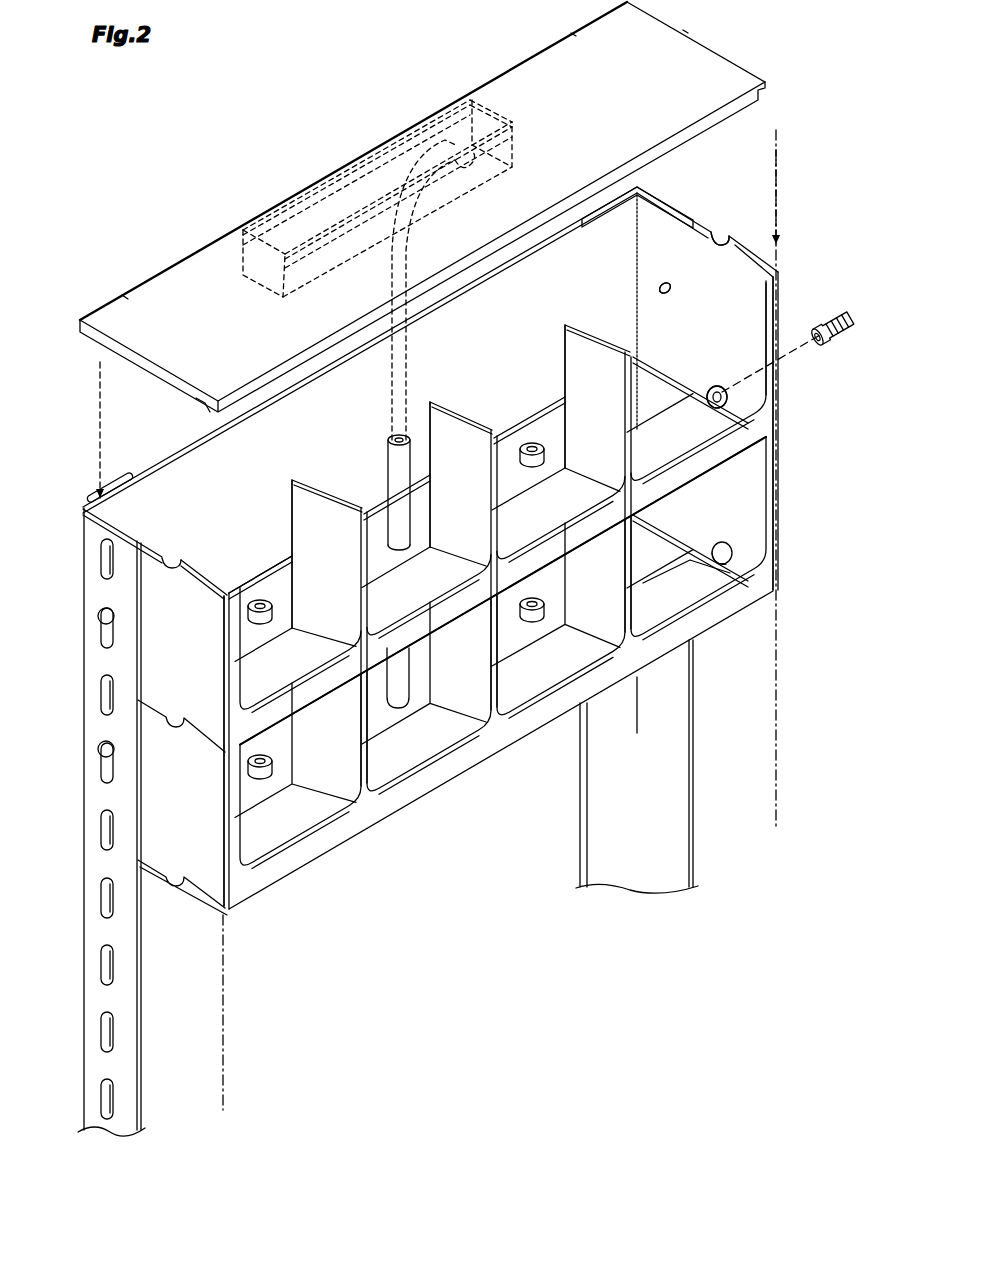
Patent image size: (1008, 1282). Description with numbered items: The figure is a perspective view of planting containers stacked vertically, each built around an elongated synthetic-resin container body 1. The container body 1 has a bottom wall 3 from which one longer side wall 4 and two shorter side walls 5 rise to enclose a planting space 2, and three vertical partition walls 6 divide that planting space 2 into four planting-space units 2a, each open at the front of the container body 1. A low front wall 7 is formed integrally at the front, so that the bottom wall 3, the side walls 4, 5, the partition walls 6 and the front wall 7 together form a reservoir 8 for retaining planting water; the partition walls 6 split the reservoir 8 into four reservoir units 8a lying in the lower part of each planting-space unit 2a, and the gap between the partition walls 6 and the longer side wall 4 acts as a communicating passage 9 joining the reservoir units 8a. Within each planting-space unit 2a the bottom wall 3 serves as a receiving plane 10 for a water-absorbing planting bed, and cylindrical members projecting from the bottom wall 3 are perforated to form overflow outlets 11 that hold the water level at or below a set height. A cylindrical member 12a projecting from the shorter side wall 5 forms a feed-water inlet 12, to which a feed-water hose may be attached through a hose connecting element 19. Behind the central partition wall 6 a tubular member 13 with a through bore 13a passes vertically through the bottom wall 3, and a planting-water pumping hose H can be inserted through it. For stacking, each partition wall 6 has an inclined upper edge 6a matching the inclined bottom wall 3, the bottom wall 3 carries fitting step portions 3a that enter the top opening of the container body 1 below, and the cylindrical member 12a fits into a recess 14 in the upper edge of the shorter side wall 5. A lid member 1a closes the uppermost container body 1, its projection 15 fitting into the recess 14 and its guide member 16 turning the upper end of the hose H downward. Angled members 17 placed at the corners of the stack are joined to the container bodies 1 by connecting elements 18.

The container body 1 is at (780, 402).
The lid member 1a is at (183, 277).
The planting space 2 is at (503, 591).
The planting-space unit 2a is at (683, 582).
The bottom wall 3 is at (662, 648).
The fitting step portion 3a is at (778, 588).
The longer side wall 4 is at (170, 485).
The shorter side wall 5 is at (710, 255).
The partition wall 6 is at (615, 360).
The inclined upper edge 6a is at (467, 413).
The front wall 7 is at (530, 557).
The reservoir 8 is at (488, 478).
The reservoir unit 8a is at (553, 430).
The communicating passage 9 is at (284, 526).
The receiving plane 10 is at (570, 497).
The overflow outlet 11 is at (530, 450).
The feed-water inlet 12 is at (718, 387).
The cylindrical member 12a is at (714, 546).
The tubular member 13 is at (412, 523).
The through bore 13a is at (392, 438).
The recess 14 is at (722, 242).
The projection 15 is at (200, 405).
The guide member 16 is at (515, 148).
The angled member 17 is at (100, 584).
The connecting element 18 is at (102, 616).
The hose connecting element 19 is at (825, 313).
The planting-water pumping hose H is at (401, 352).